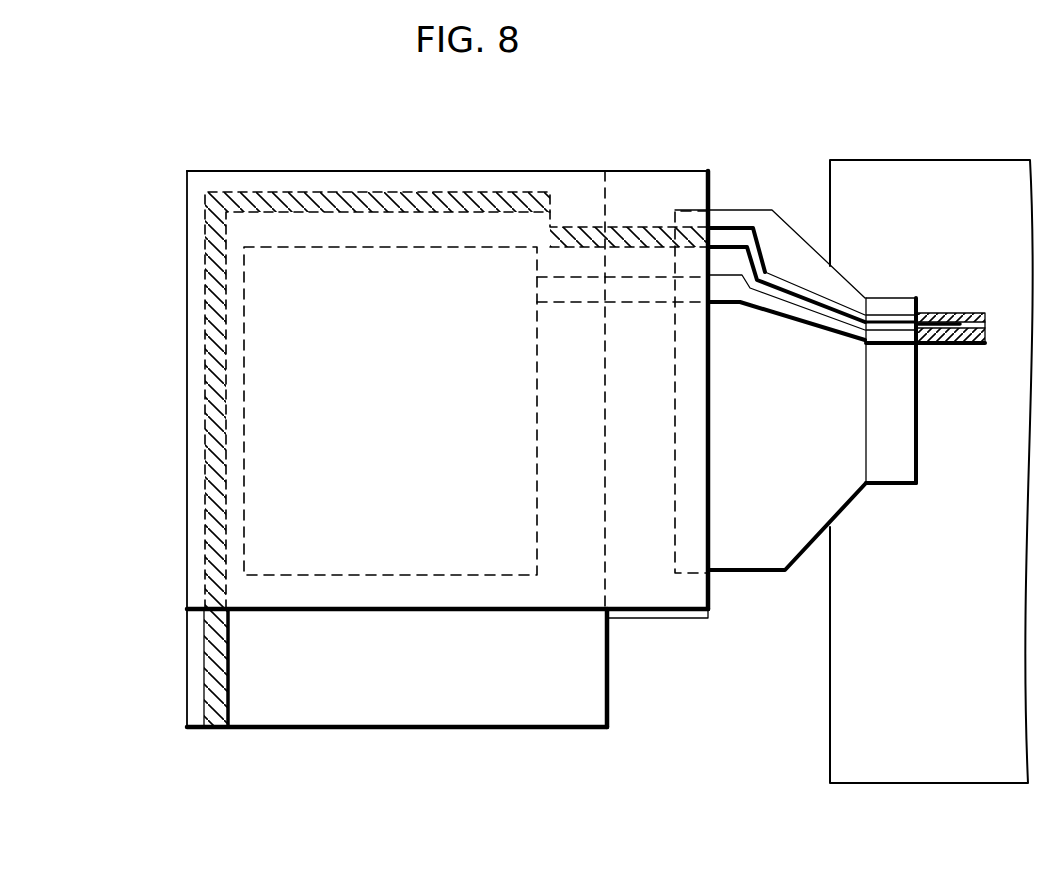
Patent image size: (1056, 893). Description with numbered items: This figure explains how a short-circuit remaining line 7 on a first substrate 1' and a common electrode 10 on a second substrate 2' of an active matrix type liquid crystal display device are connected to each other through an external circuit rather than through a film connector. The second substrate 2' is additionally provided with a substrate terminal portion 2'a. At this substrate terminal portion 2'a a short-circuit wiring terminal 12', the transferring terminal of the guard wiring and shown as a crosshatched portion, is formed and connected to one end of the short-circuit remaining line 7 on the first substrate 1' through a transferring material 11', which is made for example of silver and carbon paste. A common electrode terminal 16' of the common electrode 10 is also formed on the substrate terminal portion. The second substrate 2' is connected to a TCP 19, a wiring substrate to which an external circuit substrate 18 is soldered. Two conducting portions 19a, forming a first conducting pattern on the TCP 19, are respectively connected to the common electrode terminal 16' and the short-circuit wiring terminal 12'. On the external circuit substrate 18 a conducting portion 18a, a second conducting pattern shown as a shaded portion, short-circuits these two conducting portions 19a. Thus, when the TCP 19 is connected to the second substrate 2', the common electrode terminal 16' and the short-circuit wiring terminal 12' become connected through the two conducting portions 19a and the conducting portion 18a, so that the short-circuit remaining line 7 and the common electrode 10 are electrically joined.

The common electrode 10 is at (323, 245).
The short-circuit remaining line 7 is at (497, 190).
The transferring material 11' is at (592, 358).
The short-circuit wiring terminal 12' is at (670, 346).
The second substrate 2' is at (463, 417).
The substrate terminal portion 2'a is at (657, 636).
The first substrate 1' is at (434, 670).
The common electrode terminal 16' is at (622, 332).
The TCP (Tape Carrier Package) 19 is at (762, 210).
The conducting portions 19a is at (791, 307).
The external circuit substrate 18 is at (978, 160).
The conducting portion 18a is at (958, 345).